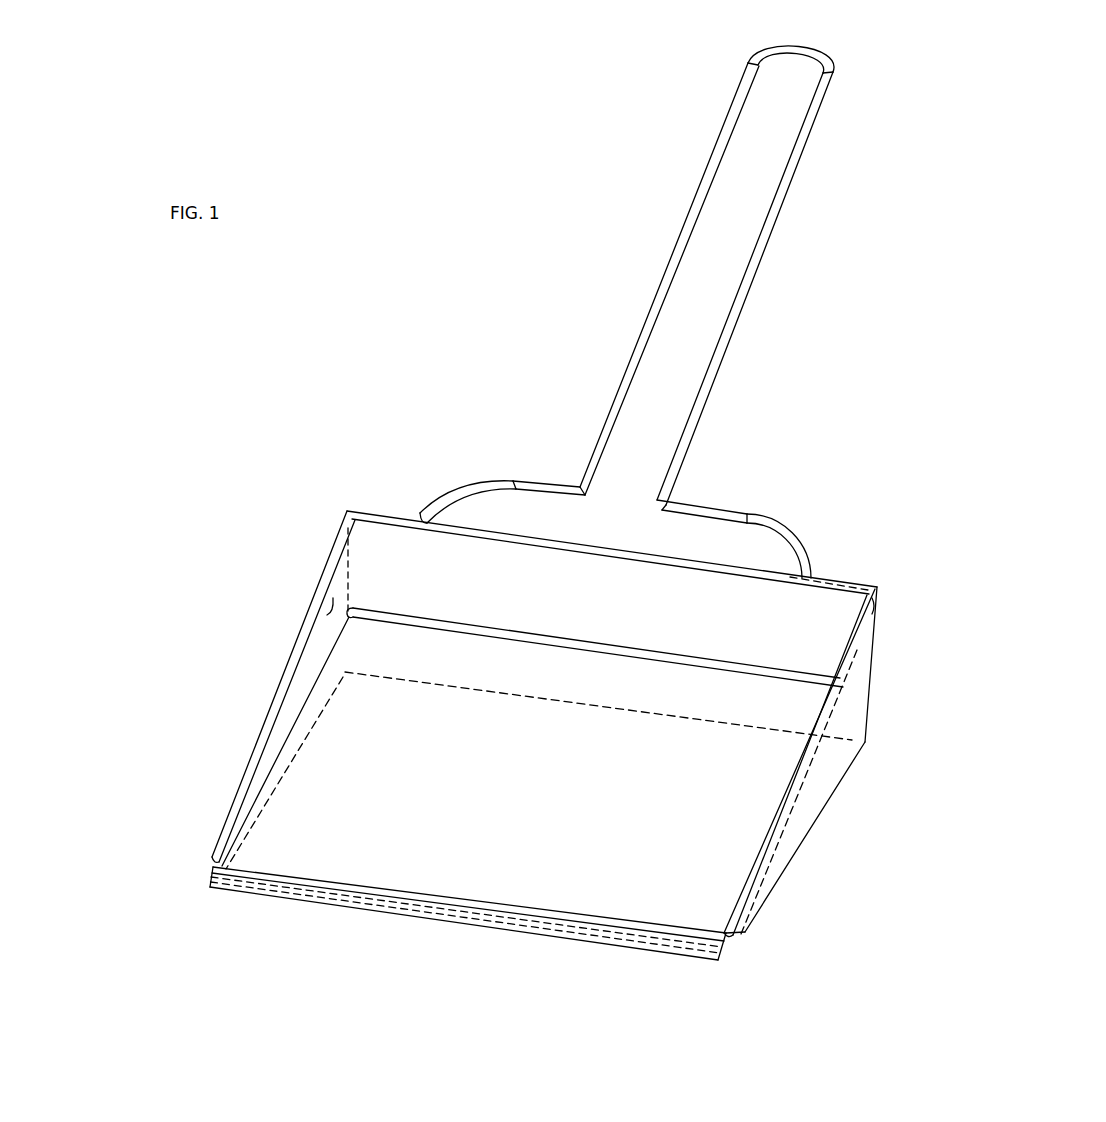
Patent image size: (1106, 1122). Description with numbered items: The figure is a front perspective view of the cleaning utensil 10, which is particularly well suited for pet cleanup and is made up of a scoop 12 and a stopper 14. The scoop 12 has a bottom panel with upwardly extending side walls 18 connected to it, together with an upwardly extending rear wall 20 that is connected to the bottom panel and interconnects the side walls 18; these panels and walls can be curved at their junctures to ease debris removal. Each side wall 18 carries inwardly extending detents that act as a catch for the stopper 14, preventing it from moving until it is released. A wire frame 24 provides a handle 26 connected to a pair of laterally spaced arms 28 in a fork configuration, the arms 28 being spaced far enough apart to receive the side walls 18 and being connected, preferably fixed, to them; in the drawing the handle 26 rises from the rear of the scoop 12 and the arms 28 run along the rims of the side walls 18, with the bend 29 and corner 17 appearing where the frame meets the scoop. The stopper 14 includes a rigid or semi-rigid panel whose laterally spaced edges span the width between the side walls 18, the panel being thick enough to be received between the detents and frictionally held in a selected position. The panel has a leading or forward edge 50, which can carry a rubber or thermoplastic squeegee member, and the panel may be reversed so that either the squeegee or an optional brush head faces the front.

The cleaning utensil 10 is at (921, 422).
The scoop 12 is at (362, 508).
The stopper 14 is at (703, 843).
The front corner edge 17 is at (730, 950).
The side walls 18 is at (293, 642).
The rear wall 20 is at (487, 580).
The wire frame 24 is at (582, 493).
The handle 26 is at (703, 177).
The arms 28 is at (333, 600).
The handle connecting portion 29 is at (803, 533).
The leading edge 50 is at (280, 900).